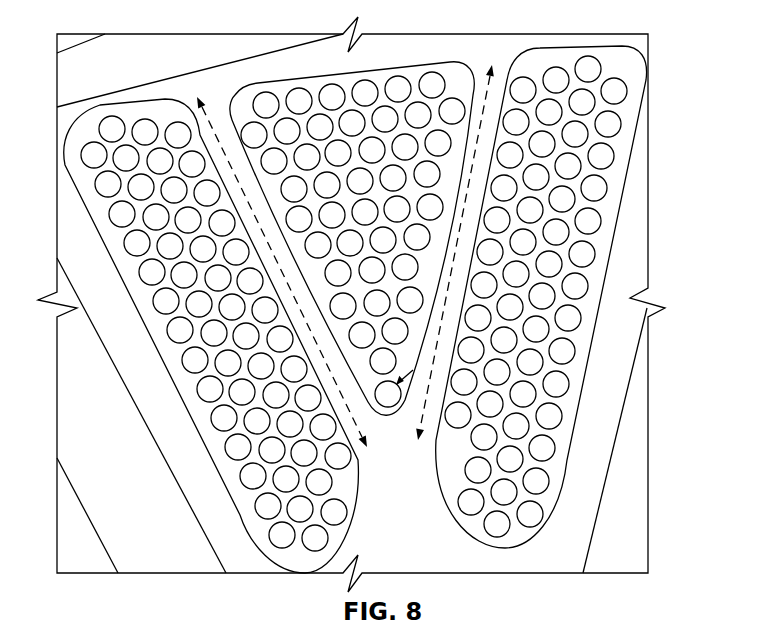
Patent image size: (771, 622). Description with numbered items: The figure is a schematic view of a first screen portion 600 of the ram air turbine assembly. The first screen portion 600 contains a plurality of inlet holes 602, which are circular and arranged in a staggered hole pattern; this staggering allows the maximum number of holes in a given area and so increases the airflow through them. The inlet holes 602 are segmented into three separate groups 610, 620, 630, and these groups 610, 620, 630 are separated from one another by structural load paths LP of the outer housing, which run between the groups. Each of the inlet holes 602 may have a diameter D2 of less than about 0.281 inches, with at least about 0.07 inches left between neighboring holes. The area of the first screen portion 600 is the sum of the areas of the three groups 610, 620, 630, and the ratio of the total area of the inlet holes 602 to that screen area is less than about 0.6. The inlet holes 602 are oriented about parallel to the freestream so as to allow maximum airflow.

The first screen portion 600 is at (600, 30).
The inlet holes 602 is at (560, 417).
The first group of inlet holes 610 is at (130, 100).
The second group of inlet holes 620 is at (392, 58).
The third group of inlet holes 630 is at (636, 53).
The structural load paths LP is at (207, 118).
The diameter D2 is at (374, 404).